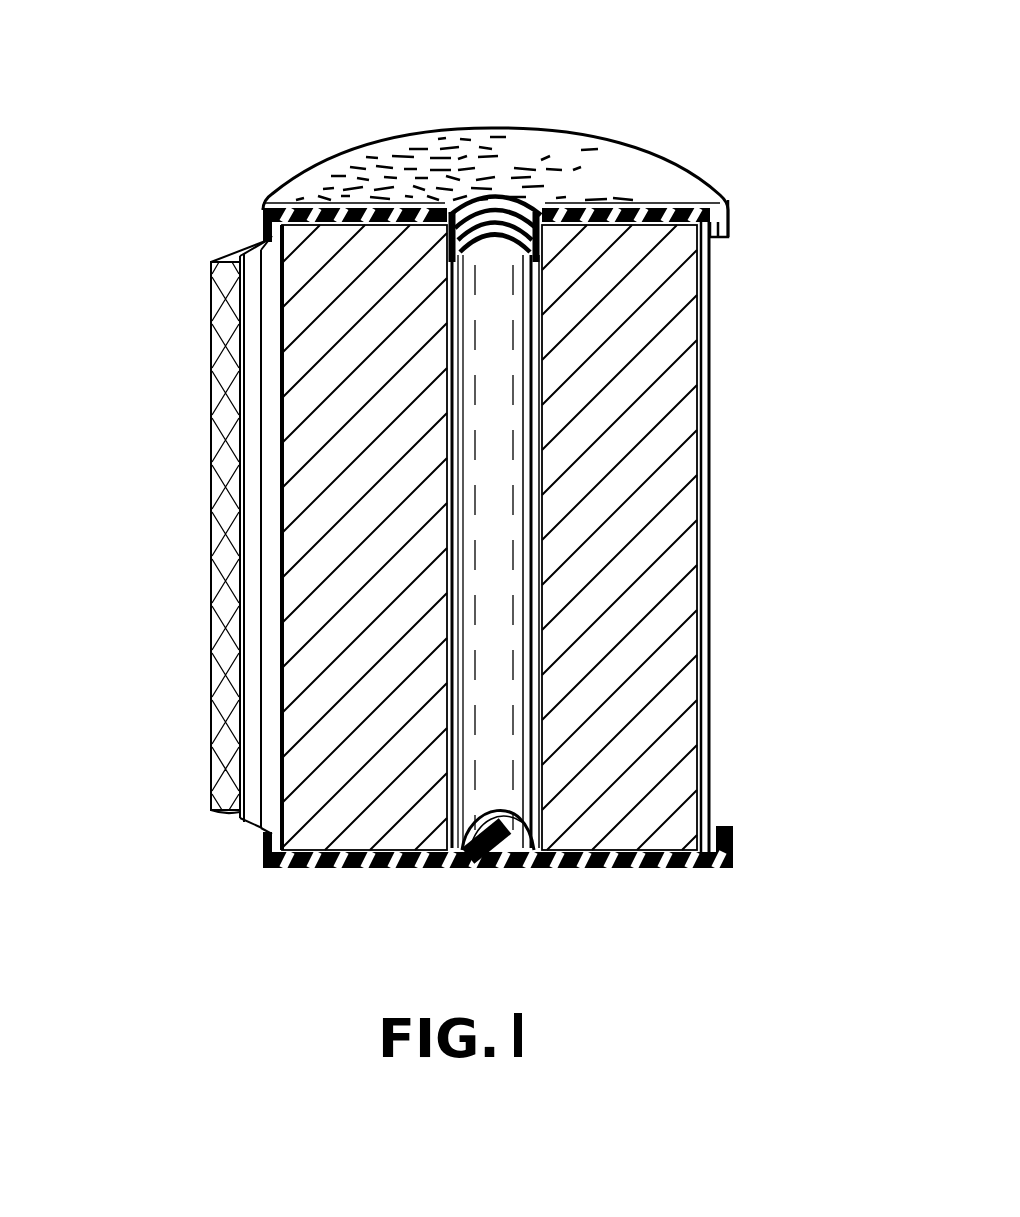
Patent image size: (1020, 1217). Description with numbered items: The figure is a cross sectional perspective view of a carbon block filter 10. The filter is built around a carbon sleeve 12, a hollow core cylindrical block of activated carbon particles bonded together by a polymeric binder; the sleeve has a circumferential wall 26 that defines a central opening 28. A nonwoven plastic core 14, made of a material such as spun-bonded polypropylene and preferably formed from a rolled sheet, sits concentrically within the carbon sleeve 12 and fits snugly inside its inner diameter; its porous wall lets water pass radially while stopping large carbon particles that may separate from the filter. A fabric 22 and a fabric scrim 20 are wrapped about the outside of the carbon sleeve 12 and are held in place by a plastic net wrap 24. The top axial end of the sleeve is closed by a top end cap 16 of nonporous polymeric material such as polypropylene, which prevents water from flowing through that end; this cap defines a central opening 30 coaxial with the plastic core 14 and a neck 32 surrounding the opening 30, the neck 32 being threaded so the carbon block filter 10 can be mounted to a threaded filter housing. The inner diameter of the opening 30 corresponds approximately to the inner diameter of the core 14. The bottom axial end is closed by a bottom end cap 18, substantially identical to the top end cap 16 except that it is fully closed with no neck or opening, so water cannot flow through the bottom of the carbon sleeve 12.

The carbon block filter 10 is at (765, 315).
The carbon sleeve 12 is at (712, 555).
The nonwoven plastic core 14 is at (502, 625).
The top end cap 16 is at (636, 183).
The bottom end cap 18 is at (303, 873).
The fabric scrim 20 is at (222, 505).
The fabric 22 is at (248, 592).
The plastic net wrap 24 is at (203, 403).
The circumferential wall 26 is at (645, 762).
The central opening 28 is at (520, 745).
The central opening 30 is at (513, 203).
The neck 32 is at (468, 205).